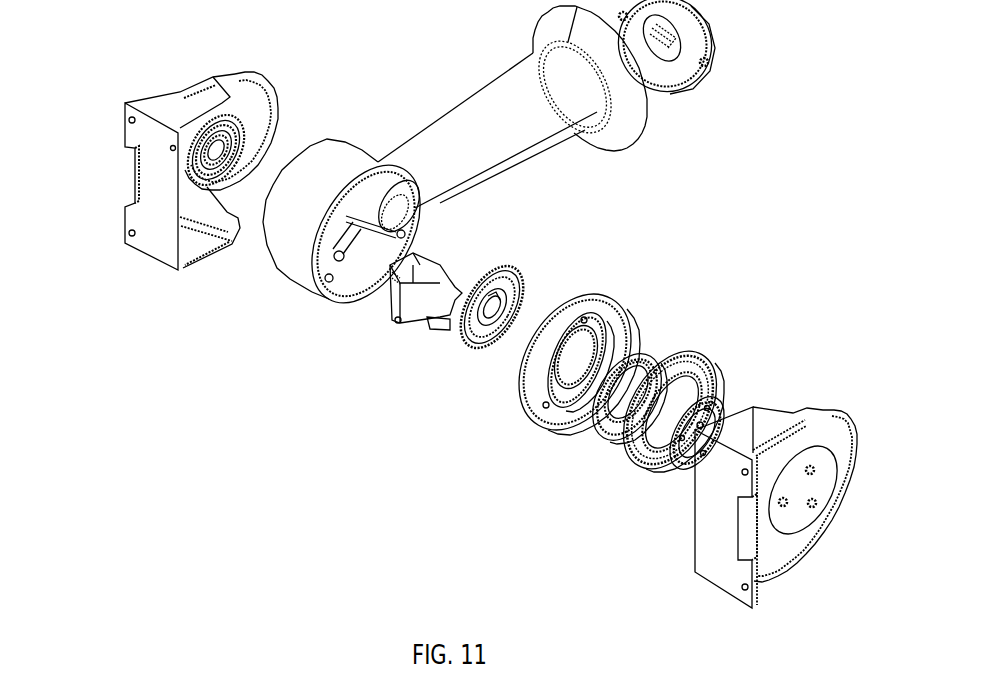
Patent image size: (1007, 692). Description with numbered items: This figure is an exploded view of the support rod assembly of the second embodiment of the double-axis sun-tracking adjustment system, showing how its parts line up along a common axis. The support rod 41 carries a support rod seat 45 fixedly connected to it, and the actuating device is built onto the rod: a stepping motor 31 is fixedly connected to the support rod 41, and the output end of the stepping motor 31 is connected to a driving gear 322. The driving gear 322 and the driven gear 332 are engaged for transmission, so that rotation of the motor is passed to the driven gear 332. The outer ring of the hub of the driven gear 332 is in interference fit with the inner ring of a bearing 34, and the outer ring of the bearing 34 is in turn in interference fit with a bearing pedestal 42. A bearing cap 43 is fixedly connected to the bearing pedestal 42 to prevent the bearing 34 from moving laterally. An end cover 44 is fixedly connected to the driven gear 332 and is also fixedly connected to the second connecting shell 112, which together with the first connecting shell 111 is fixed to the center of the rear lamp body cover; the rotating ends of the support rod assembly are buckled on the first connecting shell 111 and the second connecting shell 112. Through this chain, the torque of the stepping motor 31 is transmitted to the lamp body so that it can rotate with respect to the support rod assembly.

The first connecting shell 111 is at (165, 190).
The second connecting shell 112 is at (720, 525).
The stepping motor 31 is at (397, 303).
The driven gear 332 is at (462, 337).
The driving gear 322 is at (478, 345).
The bearing 34 is at (612, 421).
The support rod 41 is at (457, 140).
The bearing pedestal 42 is at (610, 317).
The bearing cap 43 is at (702, 382).
The end cover 44 is at (727, 417).
The support rod seat 45 is at (673, 72).